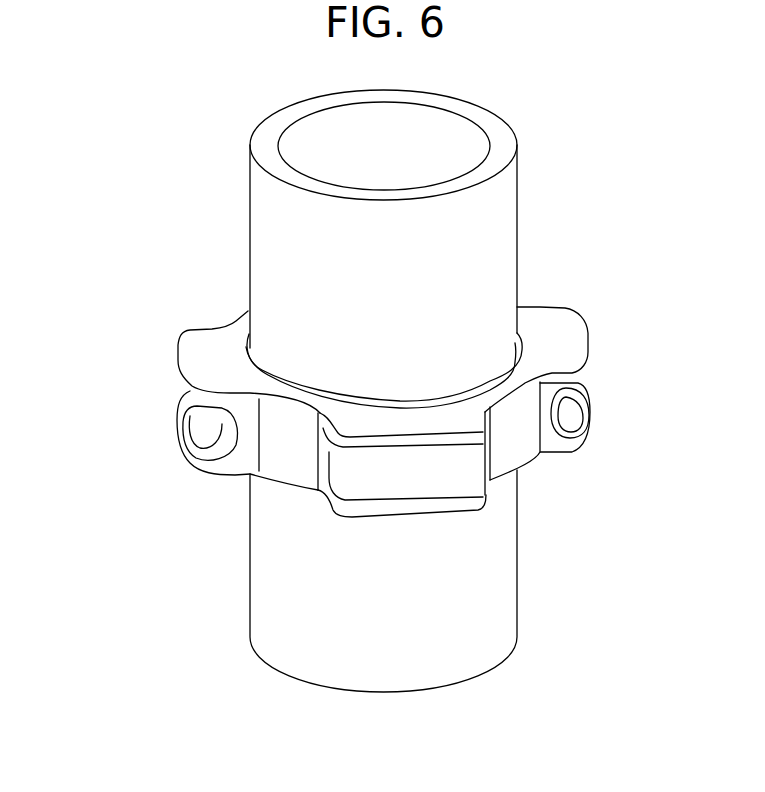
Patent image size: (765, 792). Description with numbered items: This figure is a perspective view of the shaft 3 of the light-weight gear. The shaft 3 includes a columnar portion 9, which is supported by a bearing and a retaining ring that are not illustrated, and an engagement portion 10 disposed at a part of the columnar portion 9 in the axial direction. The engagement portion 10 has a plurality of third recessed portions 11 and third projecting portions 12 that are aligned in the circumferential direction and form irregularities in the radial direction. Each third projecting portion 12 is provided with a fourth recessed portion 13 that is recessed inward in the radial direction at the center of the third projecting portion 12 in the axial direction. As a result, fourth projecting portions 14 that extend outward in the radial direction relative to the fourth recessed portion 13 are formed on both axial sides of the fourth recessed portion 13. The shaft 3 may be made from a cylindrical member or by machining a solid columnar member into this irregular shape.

The shaft 3 is at (186, 143).
The columnar portion 9 is at (522, 166).
The engagement portion 10 is at (560, 474).
The third recessed portion 11 is at (292, 461).
The third projecting portion 12 is at (198, 361).
The fourth recessed portion 13 is at (207, 418).
The fourth projecting portion 14 is at (178, 368).